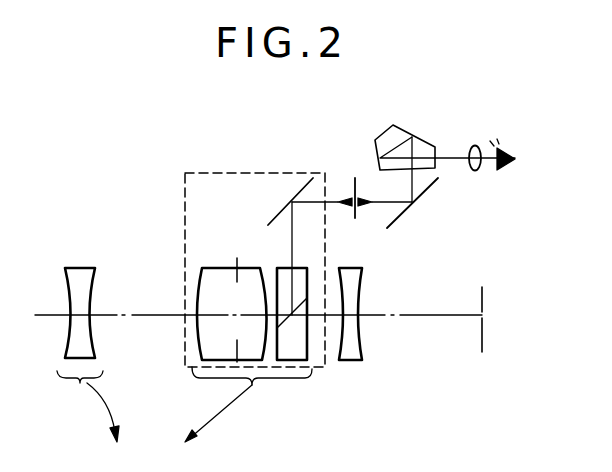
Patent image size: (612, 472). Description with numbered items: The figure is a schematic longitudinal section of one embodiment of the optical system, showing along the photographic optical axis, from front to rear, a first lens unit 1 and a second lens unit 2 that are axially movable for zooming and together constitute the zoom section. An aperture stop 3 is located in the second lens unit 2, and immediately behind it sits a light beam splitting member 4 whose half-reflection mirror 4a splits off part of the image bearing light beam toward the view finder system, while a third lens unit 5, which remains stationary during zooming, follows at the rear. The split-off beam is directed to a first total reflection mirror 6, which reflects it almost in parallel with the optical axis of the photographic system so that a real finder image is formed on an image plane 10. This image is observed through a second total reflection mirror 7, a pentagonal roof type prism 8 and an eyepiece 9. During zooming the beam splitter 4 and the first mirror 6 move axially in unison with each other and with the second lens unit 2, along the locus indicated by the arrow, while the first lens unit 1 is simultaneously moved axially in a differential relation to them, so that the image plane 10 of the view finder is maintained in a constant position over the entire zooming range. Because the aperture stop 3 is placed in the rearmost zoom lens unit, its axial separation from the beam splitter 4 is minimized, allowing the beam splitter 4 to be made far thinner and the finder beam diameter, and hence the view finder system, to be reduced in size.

The first lens unit 1 is at (87, 265).
The second lens unit 2 is at (213, 267).
The aperture stop 3 is at (237, 343).
The light beam splitting member 4 is at (290, 350).
The half-reflection mirror 4a is at (282, 323).
The third lens unit 5 is at (360, 362).
The first total reflection mirror 6 is at (287, 202).
The second total reflection mirror 7 is at (430, 187).
The pentagonal roof type prism 8 is at (427, 139).
The eyepiece 9 is at (475, 146).
The image plane 10 is at (353, 190).